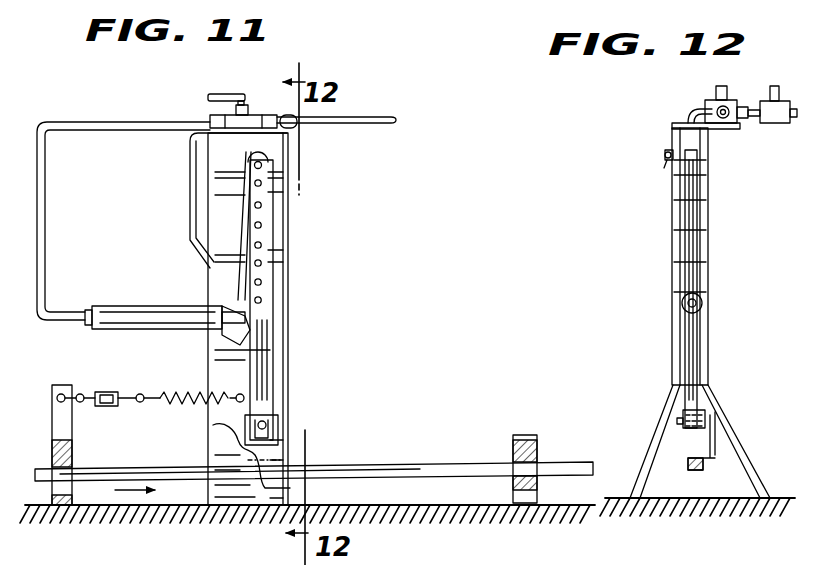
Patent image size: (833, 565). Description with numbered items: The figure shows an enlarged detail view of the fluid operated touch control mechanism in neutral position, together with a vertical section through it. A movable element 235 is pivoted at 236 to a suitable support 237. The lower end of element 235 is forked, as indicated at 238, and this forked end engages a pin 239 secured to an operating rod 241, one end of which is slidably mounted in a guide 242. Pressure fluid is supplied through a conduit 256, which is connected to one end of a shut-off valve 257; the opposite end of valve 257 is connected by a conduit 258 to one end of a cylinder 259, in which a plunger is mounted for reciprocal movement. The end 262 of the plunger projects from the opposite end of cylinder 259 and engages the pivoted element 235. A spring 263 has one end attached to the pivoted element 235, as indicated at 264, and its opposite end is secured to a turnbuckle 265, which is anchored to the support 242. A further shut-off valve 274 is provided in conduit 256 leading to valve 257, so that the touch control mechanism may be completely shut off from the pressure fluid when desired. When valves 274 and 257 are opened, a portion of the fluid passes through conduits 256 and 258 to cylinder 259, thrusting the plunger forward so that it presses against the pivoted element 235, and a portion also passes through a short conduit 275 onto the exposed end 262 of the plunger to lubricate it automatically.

In FIG. 11, the movable element 235 is at (262, 335).
In FIG. 12, the movable element 235 is at (692, 330).
In FIG. 11, the pivot 236 is at (270, 165).
In FIG. 12, the pivot 236 is at (665, 155).
In FIG. 11, the support 237 is at (283, 213).
In FIG. 11, the forked end 238 is at (278, 426).
In FIG. 12, the forked end 238 is at (690, 428).
In FIG. 11, the pin 239 is at (270, 449).
In FIG. 12, the pin 239 is at (680, 421).
In FIG. 11, the operating rod 241 is at (122, 468).
In FIG. 12, the operating rod 241 is at (689, 471).
In FIG. 11, the guide 242 is at (56, 428).
In FIG. 11, the conduit 256 is at (373, 117).
In FIG. 11, the shut-off valve 257 is at (235, 117).
In FIG. 12, the shut-off valve 257 is at (706, 105).
In FIG. 11, the conduit 258 is at (44, 181).
In FIG. 11, the cylinder 259 is at (131, 318).
In FIG. 11, the end of plunger 262 is at (243, 322).
In FIG. 12, the end of plunger 262 is at (702, 300).
In FIG. 11, the spring 263 is at (205, 392).
In FIG. 11, the spring attachment 264 is at (238, 403).
In FIG. 11, the turnbuckle 265 is at (117, 392).
In FIG. 12, the shut-off valve 274 is at (778, 124).
In FIG. 11, the short conduit 275 is at (191, 199).
In FIG. 12, the short conduit 275 is at (697, 112).